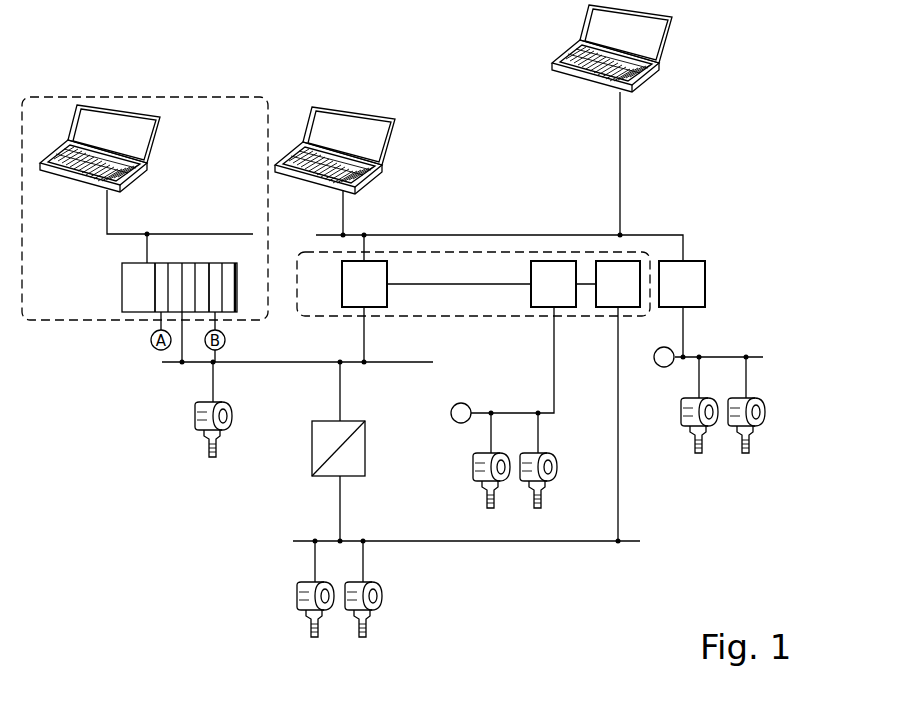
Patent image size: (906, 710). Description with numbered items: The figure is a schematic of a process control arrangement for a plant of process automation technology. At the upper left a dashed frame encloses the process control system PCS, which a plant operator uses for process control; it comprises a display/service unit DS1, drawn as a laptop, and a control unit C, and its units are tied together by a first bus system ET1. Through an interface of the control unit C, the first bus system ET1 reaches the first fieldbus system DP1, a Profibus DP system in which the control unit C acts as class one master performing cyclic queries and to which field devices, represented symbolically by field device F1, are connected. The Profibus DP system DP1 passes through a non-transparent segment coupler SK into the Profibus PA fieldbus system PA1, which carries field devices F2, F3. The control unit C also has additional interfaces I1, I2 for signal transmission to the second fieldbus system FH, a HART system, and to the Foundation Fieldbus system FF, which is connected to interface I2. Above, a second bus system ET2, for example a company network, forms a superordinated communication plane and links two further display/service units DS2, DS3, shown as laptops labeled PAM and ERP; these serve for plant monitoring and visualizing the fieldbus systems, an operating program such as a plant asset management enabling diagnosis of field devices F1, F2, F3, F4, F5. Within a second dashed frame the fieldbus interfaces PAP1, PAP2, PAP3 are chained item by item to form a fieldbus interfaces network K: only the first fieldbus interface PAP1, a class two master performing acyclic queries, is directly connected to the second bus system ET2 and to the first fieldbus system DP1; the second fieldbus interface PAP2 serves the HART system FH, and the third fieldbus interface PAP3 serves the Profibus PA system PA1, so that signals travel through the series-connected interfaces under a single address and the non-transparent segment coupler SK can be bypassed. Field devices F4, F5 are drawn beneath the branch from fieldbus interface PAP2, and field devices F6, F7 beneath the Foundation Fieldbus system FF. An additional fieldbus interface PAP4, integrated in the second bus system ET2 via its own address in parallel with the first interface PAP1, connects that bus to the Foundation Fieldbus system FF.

The process control system PCS is at (163, 97).
The display/service unit DS1 is at (147, 134).
The first bus system ET1 is at (165, 234).
The control unit C is at (110, 288).
The interface I1 is at (158, 298).
The interface I2 is at (215, 266).
The fieldbus interfaces network K is at (291, 321).
The first fieldbus interface PAP1 is at (364, 298).
The second fieldbus interface PAP2 is at (553, 284).
The third fieldbus interface PAP3 is at (618, 401).
The additional fieldbus interface PAP4 is at (682, 284).
The display/service unit DS2 is at (384, 150).
The plant asset management software PAM is at (383, 135).
The second bus system ET2 is at (523, 235).
The display/service unit DS3 is at (658, 48).
The enterprise resource planning software ERP is at (655, 38).
The first fieldbus system DP1 is at (390, 365).
The non-transparent segment coupler SK is at (312, 452).
The Profibus PA fieldbus system PA1 is at (562, 543).
The second fieldbus system FH is at (553, 367).
The Foundation Fieldbus fieldbus system FF is at (722, 357).
The field device F1 is at (205, 432).
The field device F2 is at (303, 612).
The field device F3 is at (368, 612).
The field device F4 is at (485, 485).
The field device F5 is at (545, 488).
The field device 6 F6 is at (690, 432).
The field device 7 F7 is at (752, 432).